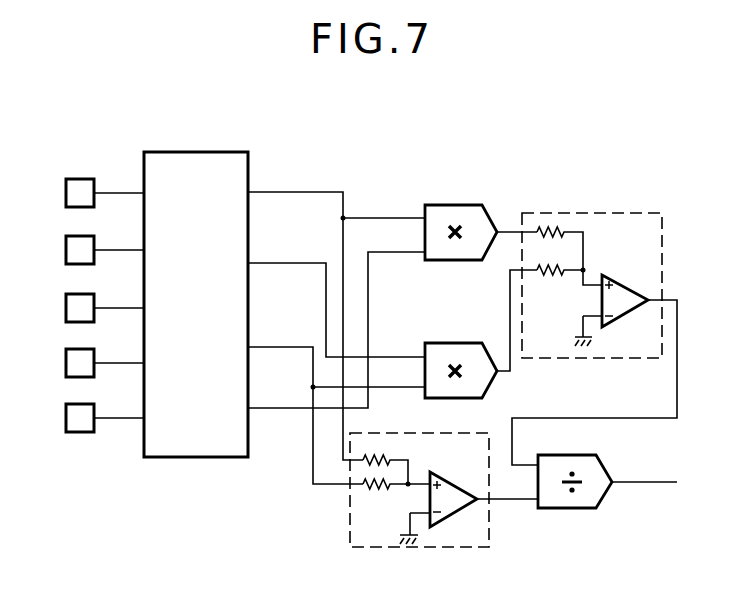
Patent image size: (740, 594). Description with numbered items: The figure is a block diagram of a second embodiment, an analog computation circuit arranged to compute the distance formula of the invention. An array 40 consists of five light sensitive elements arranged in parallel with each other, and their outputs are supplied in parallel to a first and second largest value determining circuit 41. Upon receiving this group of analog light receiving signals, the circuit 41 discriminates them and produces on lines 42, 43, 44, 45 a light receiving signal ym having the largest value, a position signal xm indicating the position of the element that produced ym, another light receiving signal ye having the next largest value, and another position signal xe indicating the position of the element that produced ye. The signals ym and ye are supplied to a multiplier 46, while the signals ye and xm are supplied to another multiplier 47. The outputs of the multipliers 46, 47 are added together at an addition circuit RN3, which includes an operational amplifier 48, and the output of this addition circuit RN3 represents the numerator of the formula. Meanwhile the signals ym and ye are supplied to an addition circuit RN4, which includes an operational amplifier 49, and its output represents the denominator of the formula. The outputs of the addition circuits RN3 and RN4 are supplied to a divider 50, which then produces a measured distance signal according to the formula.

The array 40 is at (91, 178).
The first and second largest value determining circuit 41 is at (250, 153).
The line 42 is at (328, 187).
The line 43 is at (303, 262).
The line 44 is at (298, 345).
The line 45 is at (296, 411).
The multiplier 46 is at (483, 208).
The multiplier 47 is at (466, 342).
The first operational amplifier (adder) 48 is at (626, 285).
The operational amplifier 49 is at (455, 483).
The divider 50 is at (600, 468).
The addition circuit RN3 is at (622, 213).
The addition circuit RN4 is at (490, 536).